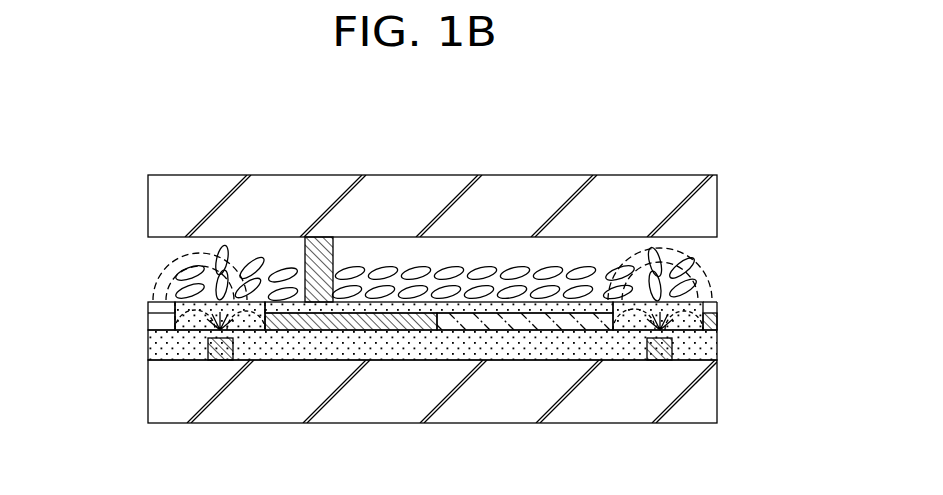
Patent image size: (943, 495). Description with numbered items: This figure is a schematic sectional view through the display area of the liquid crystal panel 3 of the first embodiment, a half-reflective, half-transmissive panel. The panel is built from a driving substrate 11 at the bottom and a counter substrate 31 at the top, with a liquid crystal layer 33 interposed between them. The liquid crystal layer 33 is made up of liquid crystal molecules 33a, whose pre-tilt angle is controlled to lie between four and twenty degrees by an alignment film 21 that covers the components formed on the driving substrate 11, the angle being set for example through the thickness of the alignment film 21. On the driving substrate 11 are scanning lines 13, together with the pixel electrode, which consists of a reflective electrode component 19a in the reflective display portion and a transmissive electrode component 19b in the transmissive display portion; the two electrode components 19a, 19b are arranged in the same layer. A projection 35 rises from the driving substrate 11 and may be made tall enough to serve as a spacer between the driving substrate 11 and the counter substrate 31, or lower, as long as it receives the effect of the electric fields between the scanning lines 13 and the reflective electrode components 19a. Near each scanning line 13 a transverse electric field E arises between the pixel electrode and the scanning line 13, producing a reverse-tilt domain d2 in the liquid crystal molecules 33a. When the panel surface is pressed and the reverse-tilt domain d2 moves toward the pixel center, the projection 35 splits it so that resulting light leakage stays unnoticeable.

The liquid crystal panel 3 is at (662, 111).
The driving substrate 11 is at (717, 410).
The scanning line 13 is at (208, 348).
The reflective electrode component 19a is at (330, 330).
The transmissive electrode component 19b is at (533, 330).
The alignment film 21 is at (148, 300).
The counter substrate 31 is at (718, 193).
The liquid crystal layer 33 is at (697, 248).
The liquid crystal molecules 33a is at (415, 272).
The projection 35 is at (305, 245).
The reverse-tilt domain d2 is at (219, 244).
The transverse electric field E is at (148, 302).